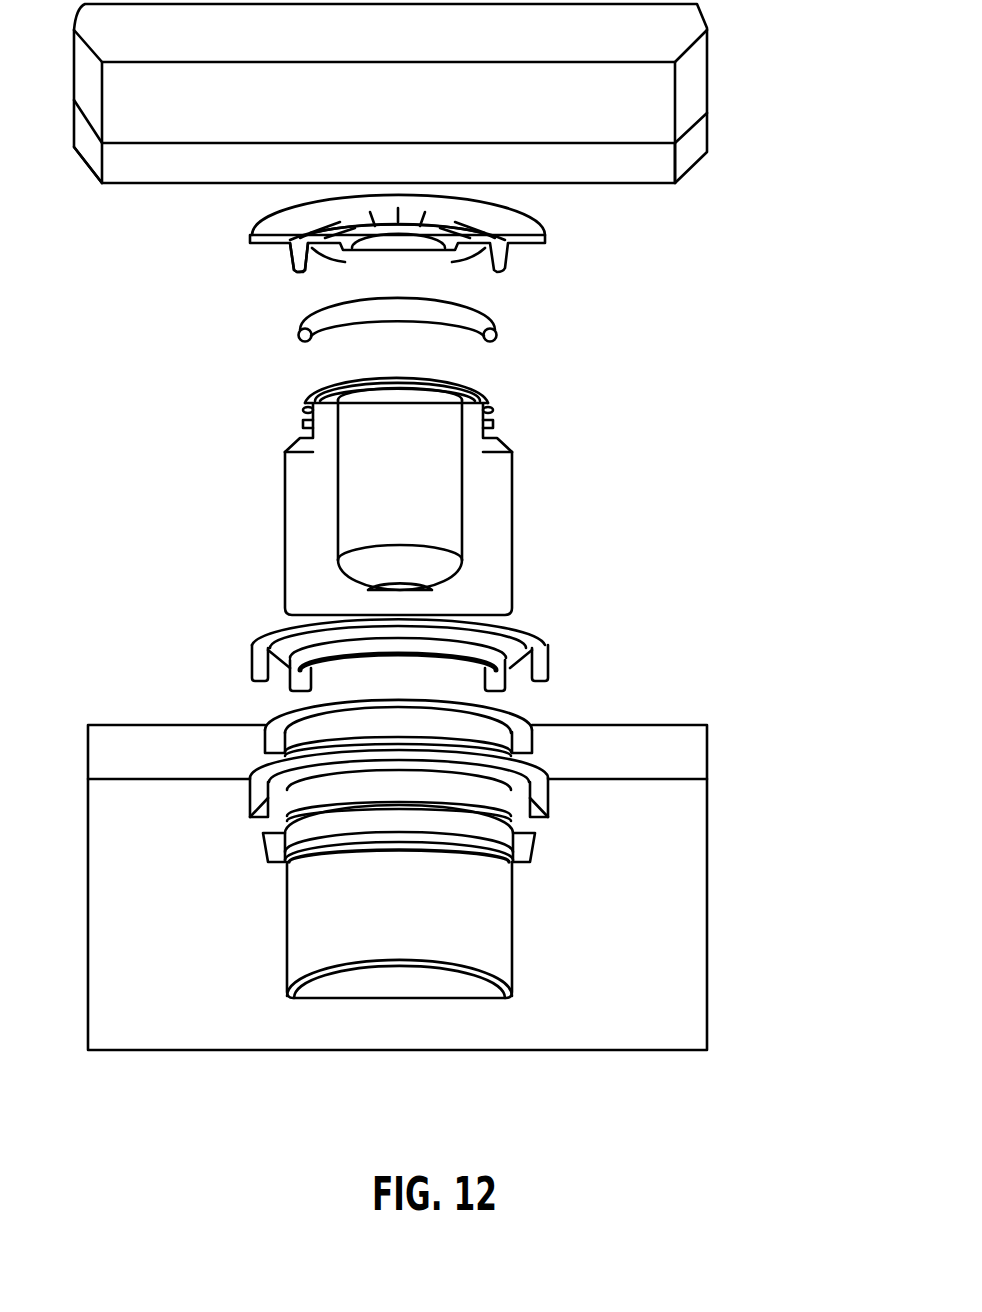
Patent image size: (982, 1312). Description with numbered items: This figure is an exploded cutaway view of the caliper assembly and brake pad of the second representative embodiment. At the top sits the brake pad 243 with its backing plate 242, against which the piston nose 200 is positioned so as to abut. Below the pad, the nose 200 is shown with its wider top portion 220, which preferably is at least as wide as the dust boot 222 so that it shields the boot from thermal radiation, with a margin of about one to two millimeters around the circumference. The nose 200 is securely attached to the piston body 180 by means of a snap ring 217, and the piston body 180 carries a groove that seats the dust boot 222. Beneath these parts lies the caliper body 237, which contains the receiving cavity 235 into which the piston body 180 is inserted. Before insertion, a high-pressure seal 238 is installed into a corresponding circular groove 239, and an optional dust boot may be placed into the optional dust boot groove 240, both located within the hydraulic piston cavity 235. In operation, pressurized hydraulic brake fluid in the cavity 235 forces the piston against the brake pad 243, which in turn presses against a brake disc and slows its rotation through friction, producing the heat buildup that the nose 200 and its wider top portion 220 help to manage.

The piston body 180 is at (517, 504).
The nose 200 is at (570, 237).
The snap ring 217 is at (505, 333).
The wider top portion 220 is at (272, 248).
The dust boot 222 is at (552, 657).
The receiving cavity 235 is at (310, 915).
The caliper body 237 is at (643, 1030).
The high-pressure seal 238 is at (528, 741).
The circular groove 239 is at (530, 851).
The dust boot groove 240 is at (553, 797).
The backing plate 242 is at (131, 170).
The brake pad 243 is at (700, 109).